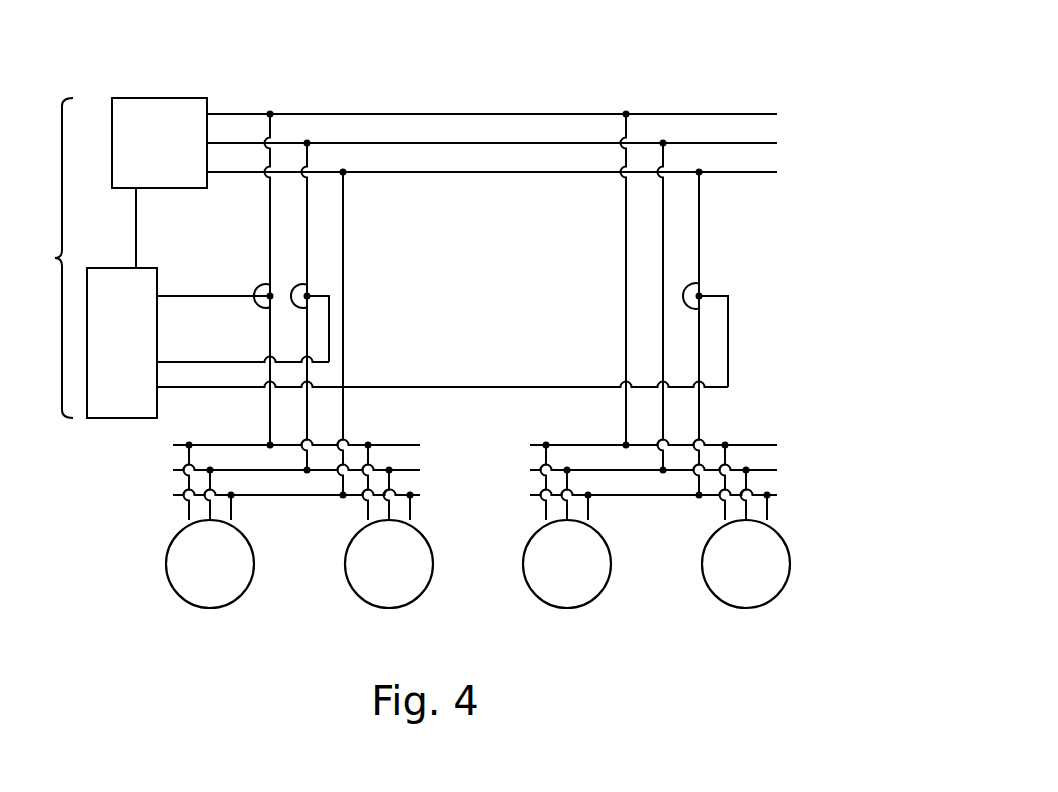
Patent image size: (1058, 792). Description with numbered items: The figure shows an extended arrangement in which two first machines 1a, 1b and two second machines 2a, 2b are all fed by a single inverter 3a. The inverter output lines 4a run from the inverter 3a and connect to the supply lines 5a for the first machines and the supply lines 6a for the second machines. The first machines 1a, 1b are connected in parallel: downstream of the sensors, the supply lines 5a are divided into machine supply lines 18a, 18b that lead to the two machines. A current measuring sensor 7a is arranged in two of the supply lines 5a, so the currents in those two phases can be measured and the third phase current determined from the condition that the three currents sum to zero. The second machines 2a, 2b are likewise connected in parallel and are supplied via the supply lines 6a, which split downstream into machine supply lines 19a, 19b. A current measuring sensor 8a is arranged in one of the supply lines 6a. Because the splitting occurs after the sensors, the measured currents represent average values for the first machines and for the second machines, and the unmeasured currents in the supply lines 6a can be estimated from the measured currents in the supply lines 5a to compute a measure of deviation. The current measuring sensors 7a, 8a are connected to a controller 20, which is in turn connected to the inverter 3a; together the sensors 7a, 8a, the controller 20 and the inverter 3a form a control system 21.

The first machine 1a is at (178, 598).
The first machine 1b is at (357, 595).
The second machine 2a is at (537, 598).
The second machine 2b is at (780, 593).
The inverter 3a is at (160, 98).
The inverter output lines 4a is at (466, 172).
The supply lines 5a is at (340, 213).
The supply lines 6a is at (697, 220).
The current measuring sensor 7a is at (304, 299).
The current measuring sensor 8a is at (700, 297).
The machine supply lines 18a is at (227, 508).
The machine supply lines 18b is at (412, 510).
The machine supply lines 19a is at (588, 510).
The machine supply lines 19b is at (770, 508).
The controller 20 is at (109, 349).
The control system 21 is at (47, 258).